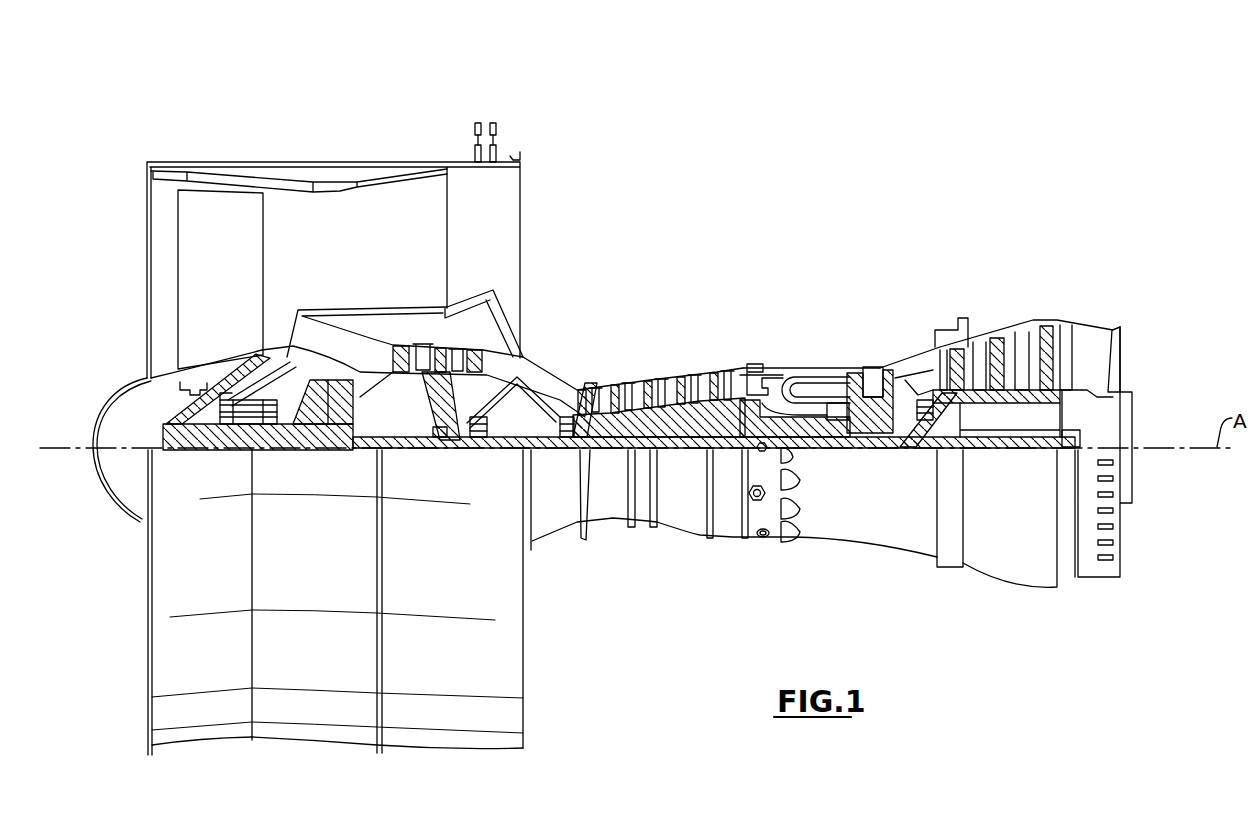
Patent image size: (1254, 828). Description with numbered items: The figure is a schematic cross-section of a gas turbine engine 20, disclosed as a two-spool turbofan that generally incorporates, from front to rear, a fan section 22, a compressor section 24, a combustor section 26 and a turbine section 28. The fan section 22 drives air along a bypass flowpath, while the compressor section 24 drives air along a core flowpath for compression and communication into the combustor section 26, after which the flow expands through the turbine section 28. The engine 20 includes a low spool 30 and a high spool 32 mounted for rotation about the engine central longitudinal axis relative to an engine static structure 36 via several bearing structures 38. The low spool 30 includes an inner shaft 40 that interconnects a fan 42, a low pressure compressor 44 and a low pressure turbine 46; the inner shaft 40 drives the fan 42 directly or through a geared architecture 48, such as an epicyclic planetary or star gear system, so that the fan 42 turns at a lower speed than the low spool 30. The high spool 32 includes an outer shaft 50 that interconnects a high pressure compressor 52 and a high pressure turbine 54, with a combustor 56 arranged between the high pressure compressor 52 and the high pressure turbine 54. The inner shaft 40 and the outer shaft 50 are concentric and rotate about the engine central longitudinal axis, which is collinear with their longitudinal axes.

The gas turbine engine 20 is at (826, 200).
The fan section 22 is at (262, 150).
The compressor section 24 is at (575, 352).
The combustor section 26 is at (801, 340).
The turbine section 28 is at (957, 300).
The low spool 30 is at (685, 460).
The high spool 32 is at (733, 390).
The engine static structure 36 is at (729, 545).
The bearing structures 38 is at (485, 449).
The inner shaft 40 is at (546, 455).
The fan 42 is at (232, 293).
The low pressure compressor 44 is at (457, 346).
The low pressure turbine 46 is at (994, 347).
The geared architecture 48 is at (341, 449).
The outer shaft 50 is at (821, 437).
The high pressure compressor 52 is at (657, 408).
The high pressure turbine 54 is at (873, 367).
The combustor 56 is at (805, 388).